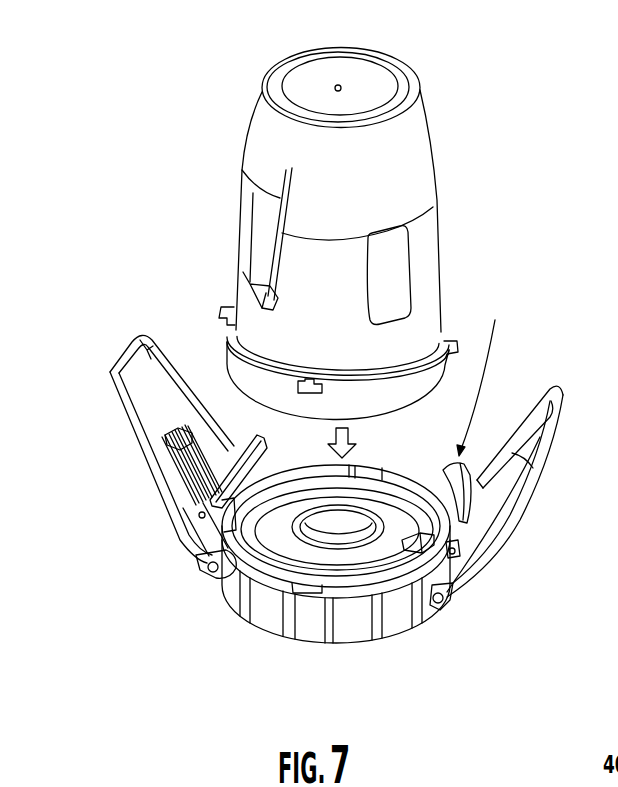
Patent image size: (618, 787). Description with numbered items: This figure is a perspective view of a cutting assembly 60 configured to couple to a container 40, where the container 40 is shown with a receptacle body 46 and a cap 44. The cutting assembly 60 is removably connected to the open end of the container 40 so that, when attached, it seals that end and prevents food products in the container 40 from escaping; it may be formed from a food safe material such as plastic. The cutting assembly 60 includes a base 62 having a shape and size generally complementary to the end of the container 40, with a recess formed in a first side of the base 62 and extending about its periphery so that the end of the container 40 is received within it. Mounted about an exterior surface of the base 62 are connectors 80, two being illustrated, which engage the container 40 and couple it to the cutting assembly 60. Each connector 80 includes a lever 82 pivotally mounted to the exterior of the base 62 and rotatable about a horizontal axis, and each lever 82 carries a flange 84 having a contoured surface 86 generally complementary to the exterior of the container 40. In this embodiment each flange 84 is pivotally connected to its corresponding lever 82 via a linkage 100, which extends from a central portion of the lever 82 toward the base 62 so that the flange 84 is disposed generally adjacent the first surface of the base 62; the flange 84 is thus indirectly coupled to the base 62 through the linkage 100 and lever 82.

The container 40 is at (190, 96).
The cap 44 is at (353, 78).
The receptacle body 46 is at (397, 182).
The cutting assembly 60 is at (257, 645).
The base 62 is at (390, 618).
The connector 80 is at (158, 530).
The lever 82 is at (515, 513).
The flange 84 is at (205, 522).
The contoured surface 86 is at (242, 432).
The linkage 100 is at (205, 478).